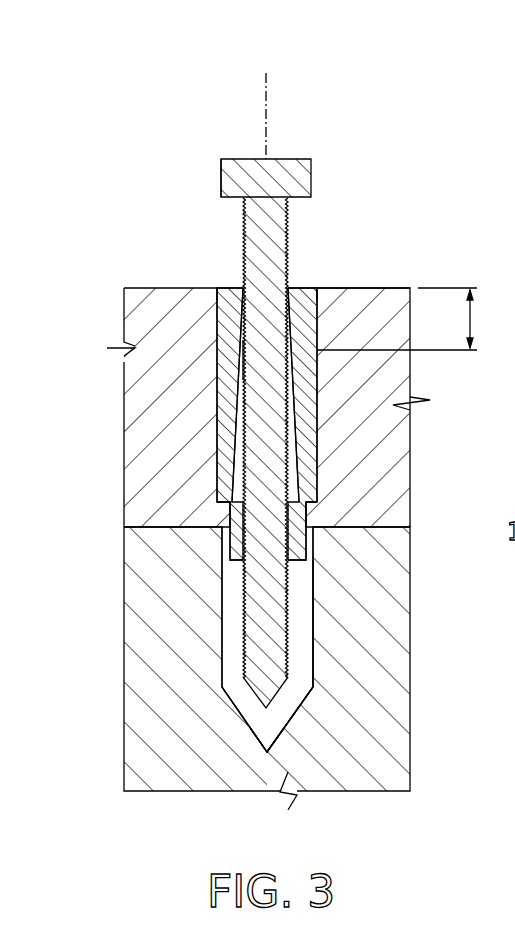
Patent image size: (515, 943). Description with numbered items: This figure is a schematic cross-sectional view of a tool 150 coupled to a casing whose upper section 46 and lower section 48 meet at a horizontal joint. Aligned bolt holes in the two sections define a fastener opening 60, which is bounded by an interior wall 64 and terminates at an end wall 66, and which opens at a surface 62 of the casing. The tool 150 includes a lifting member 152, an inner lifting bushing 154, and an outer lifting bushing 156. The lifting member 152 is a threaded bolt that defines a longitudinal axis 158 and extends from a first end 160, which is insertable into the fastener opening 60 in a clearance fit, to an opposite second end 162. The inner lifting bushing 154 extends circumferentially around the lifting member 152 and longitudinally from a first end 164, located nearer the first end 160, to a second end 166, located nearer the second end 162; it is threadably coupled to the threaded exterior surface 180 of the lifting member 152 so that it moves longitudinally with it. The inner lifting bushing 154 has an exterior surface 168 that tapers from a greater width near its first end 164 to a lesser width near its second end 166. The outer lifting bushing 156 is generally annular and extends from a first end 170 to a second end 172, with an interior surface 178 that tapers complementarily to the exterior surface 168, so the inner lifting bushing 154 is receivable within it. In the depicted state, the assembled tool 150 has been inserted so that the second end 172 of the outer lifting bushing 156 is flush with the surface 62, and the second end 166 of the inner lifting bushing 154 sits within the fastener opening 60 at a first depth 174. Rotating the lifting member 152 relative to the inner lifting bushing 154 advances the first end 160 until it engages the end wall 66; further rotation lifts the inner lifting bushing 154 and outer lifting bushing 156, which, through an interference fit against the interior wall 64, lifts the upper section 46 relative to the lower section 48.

The upper section 46 is at (372, 408).
The lower section 48 is at (384, 591).
The fastener opening 60 is at (285, 700).
The surface 62 is at (383, 288).
The interior wall 64 is at (309, 617).
The end wall 66 is at (258, 733).
The tool 150 is at (263, 373).
The lifting member 152 is at (285, 167).
The inner lifting bushing 154 is at (232, 486).
The outer lifting bushing 156 is at (308, 288).
The longitudinal axis 158 is at (266, 92).
The first end 160 is at (250, 704).
The second end 162 is at (205, 176).
The first end 164 is at (208, 569).
The second end 166 is at (228, 359).
The exterior surface 168 is at (222, 537).
The first end 170 is at (340, 495).
The second end 172 is at (202, 284).
The first depth 174 is at (470, 318).
The interior surface 178 is at (243, 287).
The exterior surface 180 is at (288, 210).